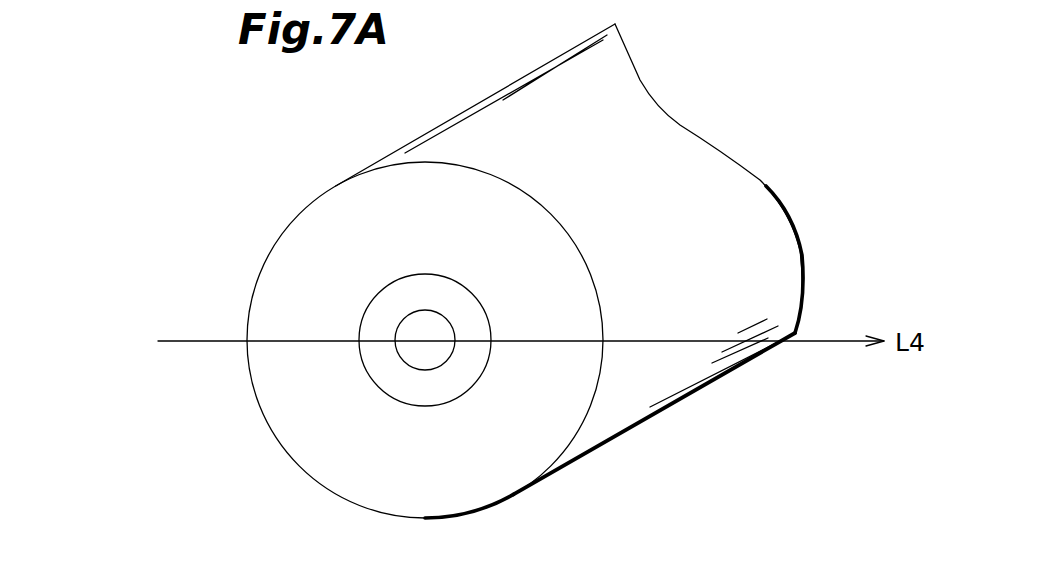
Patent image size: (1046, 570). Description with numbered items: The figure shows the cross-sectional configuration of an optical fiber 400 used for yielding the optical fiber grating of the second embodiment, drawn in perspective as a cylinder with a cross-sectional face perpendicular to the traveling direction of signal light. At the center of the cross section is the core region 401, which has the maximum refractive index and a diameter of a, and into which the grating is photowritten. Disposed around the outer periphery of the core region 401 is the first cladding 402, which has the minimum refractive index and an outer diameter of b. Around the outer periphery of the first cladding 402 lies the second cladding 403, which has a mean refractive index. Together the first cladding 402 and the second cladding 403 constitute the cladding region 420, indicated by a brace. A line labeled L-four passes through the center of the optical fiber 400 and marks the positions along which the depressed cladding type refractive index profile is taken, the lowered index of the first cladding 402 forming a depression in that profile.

The optical fiber 400 is at (721, 183).
The core region 401 is at (440, 348).
The first cladding 402 is at (370, 322).
The second cladding 403 is at (290, 250).
The cladding region 420 is at (323, 340).